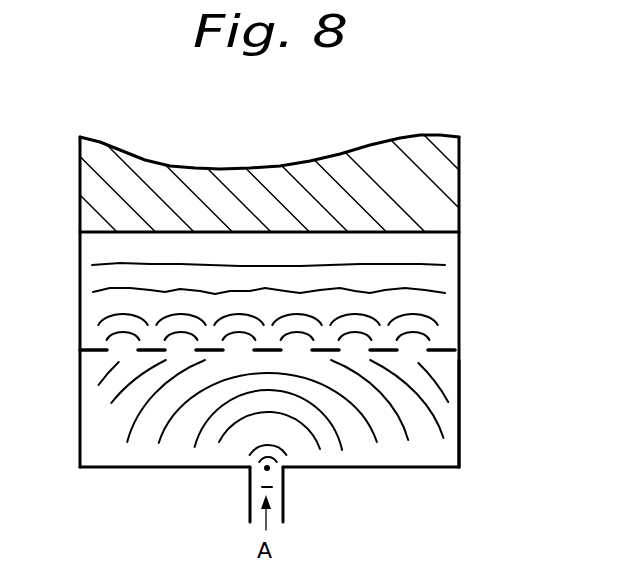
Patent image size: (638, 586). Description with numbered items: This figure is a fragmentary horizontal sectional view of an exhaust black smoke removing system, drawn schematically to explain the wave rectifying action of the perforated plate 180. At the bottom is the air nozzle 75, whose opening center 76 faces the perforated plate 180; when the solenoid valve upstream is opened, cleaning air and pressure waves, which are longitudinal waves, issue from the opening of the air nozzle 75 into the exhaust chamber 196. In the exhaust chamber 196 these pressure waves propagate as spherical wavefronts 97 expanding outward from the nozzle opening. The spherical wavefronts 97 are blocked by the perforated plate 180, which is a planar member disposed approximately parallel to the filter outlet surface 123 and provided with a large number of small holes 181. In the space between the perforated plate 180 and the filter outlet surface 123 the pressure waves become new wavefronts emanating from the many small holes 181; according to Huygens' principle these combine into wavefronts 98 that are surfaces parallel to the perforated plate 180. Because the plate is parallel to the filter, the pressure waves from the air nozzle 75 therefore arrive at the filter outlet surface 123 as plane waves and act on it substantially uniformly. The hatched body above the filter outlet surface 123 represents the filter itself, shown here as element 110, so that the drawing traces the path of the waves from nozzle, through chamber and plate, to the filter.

The substrate layer 110 is at (334, 153).
The filter outlet surface 123 is at (430, 232).
The wavefronts 98 is at (100, 325).
The small holes 181 is at (421, 343).
The perforated plate 180 is at (445, 353).
The spherical wavefronts 97 is at (138, 421).
The exhaust chamber 196 is at (420, 433).
The air nozzle 75 is at (250, 487).
The opening center 76 is at (284, 470).